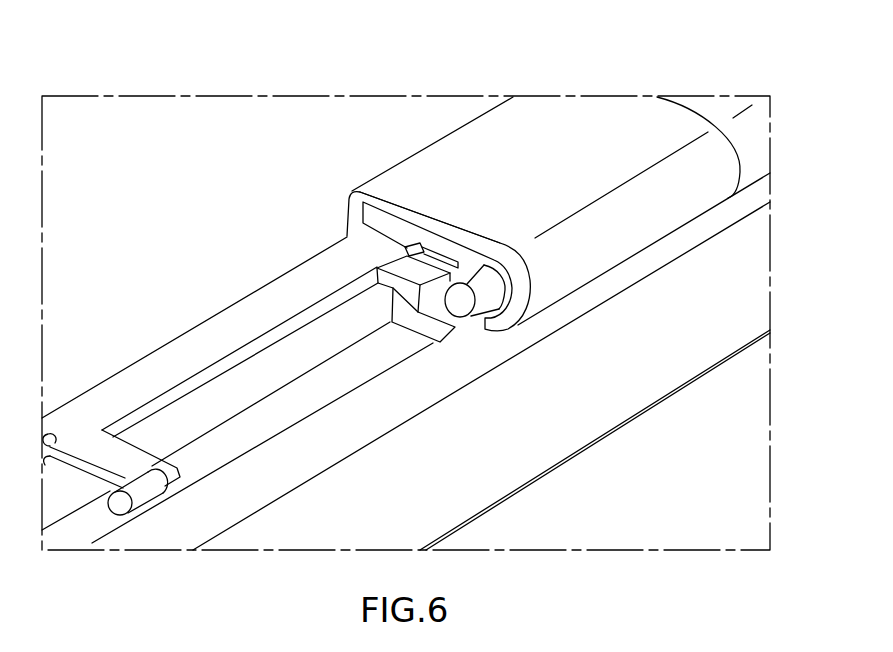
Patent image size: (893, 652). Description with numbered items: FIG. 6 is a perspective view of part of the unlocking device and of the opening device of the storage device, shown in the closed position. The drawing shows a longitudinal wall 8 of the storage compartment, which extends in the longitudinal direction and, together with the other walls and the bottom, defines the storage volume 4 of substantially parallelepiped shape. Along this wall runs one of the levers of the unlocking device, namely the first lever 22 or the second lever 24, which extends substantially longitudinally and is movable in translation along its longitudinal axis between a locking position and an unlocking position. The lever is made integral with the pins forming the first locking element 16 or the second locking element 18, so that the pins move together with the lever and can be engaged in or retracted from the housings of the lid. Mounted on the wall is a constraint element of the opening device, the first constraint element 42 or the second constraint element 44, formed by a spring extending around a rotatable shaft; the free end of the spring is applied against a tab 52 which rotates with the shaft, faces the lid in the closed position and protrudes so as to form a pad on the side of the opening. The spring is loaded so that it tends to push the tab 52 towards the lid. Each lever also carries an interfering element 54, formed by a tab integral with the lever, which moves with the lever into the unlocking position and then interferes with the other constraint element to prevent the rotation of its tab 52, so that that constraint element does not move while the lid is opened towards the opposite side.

The storage volume 4 is at (212, 270).
The longitudinal wall 8 is at (598, 365).
The first locking element 16 is at (160, 486).
The second locking element 18 is at (138, 493).
The first lever 22 is at (231, 376).
The second lever 24 is at (134, 376).
The first constraint element 42 is at (396, 190).
The second constraint element 44 is at (428, 177).
The tab 52 is at (535, 122).
The interfering element 54 is at (410, 266).